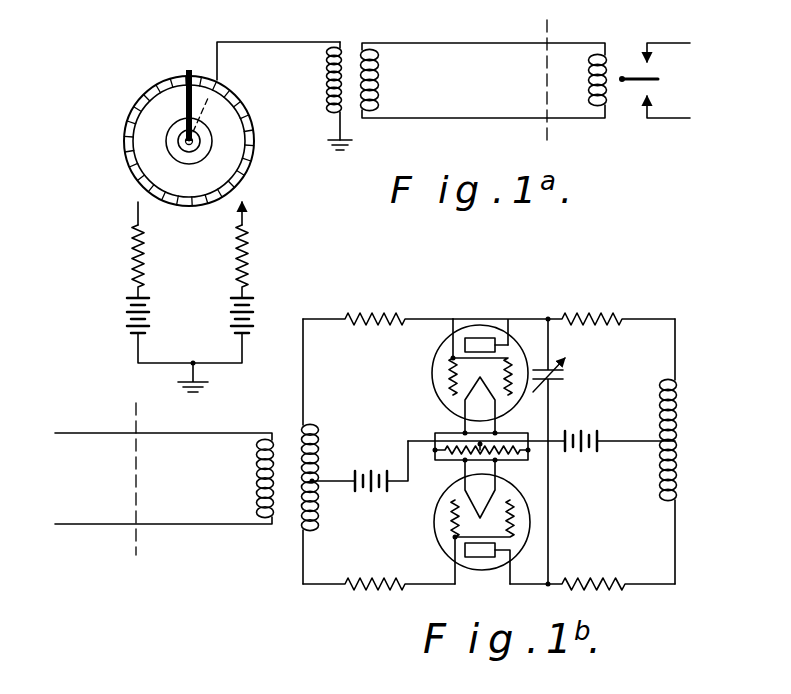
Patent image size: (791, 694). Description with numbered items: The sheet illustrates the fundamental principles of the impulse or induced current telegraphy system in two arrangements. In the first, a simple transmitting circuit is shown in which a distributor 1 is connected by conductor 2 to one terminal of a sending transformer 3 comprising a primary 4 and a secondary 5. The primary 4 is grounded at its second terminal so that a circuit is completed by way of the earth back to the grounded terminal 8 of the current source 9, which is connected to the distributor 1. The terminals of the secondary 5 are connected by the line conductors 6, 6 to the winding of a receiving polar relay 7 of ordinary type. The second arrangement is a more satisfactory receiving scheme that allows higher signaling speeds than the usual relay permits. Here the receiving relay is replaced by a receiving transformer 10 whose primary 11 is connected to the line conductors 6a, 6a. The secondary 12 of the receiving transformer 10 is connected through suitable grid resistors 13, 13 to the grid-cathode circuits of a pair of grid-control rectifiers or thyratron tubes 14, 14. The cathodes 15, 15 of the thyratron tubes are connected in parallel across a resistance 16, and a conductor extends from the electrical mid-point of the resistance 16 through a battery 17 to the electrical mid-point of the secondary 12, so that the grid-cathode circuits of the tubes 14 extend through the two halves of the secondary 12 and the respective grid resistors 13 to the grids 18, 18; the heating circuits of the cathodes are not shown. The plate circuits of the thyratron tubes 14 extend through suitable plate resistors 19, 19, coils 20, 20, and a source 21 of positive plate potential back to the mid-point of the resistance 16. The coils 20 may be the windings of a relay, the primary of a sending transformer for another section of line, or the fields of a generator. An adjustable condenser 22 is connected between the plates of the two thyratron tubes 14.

In FIG. 1A, the distributor 1 is at (134, 120).
In FIG. 1A, the conductor 2 is at (268, 42).
In FIG. 1A, the sending transformer 3 is at (341, 79).
In FIG. 1A, the primary 4 is at (327, 86).
In FIG. 1A, the secondary 5 is at (379, 80).
In FIG. 1A, the line conductors 6 is at (458, 118).
In FIG. 1A, the receiving polar relay 7 is at (654, 71).
In FIG. 1A, the grounded terminal 8 is at (212, 386).
In FIG. 1A, the current source 9 is at (228, 321).
In FIG. 1B, the line conductors 6a is at (158, 524).
In FIG. 1B, the receiving transformer 10 is at (294, 451).
In FIG. 1B, the primary 11 is at (256, 486).
In FIG. 1B, the secondary 12 is at (318, 470).
In FIG. 1B, the grid resistors 13 is at (365, 312).
In FIG. 1B, the thyratron tubes 14 is at (481, 447).
In FIG. 1B, the cathodes 15 is at (480, 447).
In FIG. 1B, the resistance 16 is at (515, 456).
In FIG. 1B, the battery 17 is at (379, 494).
In FIG. 1B, the grids 18 is at (450, 382).
In FIG. 1B, the plate resistors 19 is at (585, 312).
In FIG. 1B, the coils 20 is at (683, 462).
In FIG. 1B, the source of positive plate potential 21 is at (587, 424).
In FIG. 1B, the adjustable condenser 22 is at (567, 451).